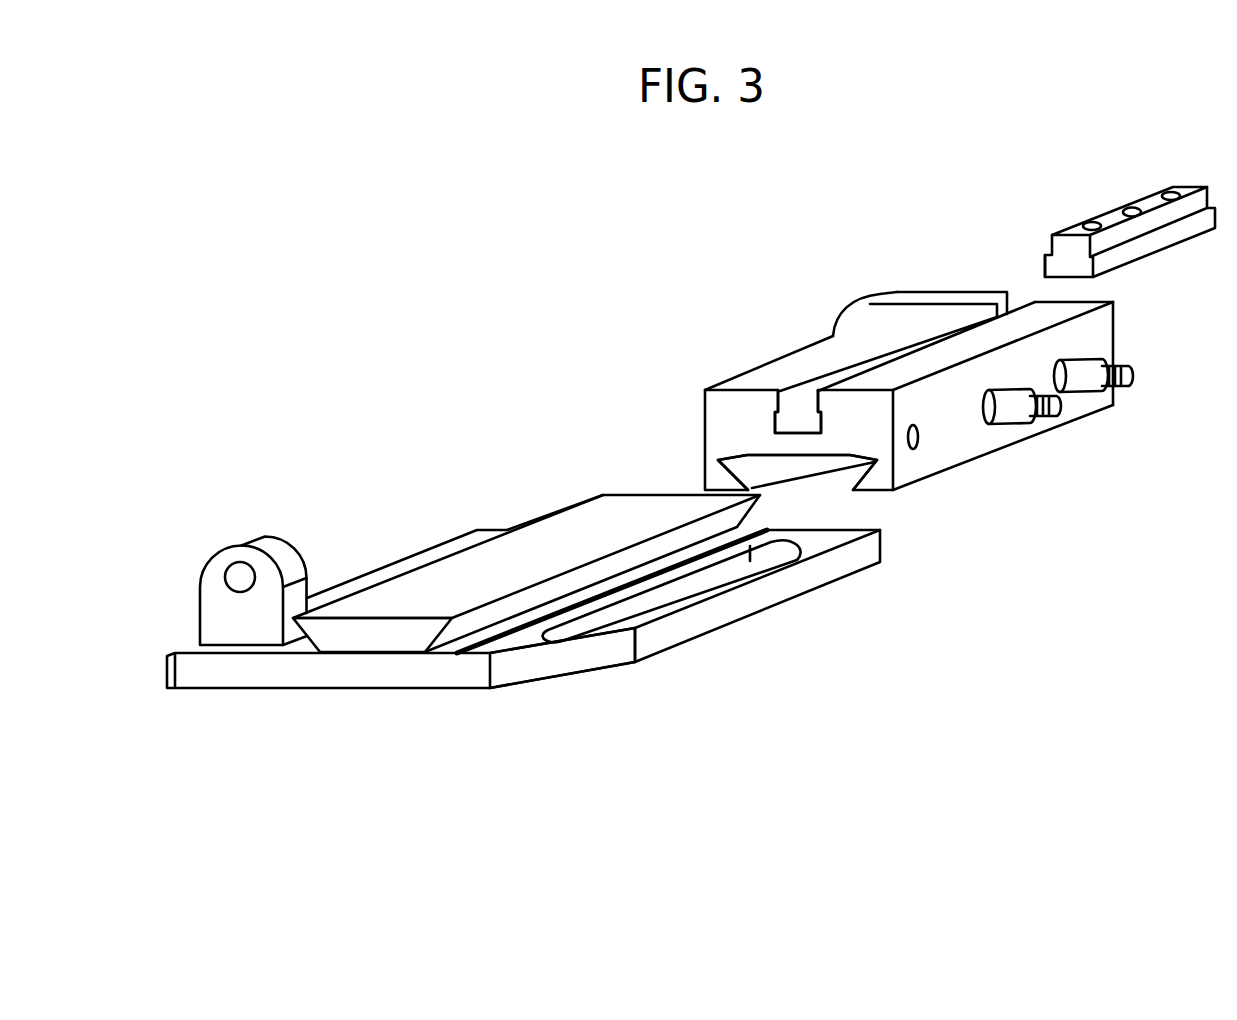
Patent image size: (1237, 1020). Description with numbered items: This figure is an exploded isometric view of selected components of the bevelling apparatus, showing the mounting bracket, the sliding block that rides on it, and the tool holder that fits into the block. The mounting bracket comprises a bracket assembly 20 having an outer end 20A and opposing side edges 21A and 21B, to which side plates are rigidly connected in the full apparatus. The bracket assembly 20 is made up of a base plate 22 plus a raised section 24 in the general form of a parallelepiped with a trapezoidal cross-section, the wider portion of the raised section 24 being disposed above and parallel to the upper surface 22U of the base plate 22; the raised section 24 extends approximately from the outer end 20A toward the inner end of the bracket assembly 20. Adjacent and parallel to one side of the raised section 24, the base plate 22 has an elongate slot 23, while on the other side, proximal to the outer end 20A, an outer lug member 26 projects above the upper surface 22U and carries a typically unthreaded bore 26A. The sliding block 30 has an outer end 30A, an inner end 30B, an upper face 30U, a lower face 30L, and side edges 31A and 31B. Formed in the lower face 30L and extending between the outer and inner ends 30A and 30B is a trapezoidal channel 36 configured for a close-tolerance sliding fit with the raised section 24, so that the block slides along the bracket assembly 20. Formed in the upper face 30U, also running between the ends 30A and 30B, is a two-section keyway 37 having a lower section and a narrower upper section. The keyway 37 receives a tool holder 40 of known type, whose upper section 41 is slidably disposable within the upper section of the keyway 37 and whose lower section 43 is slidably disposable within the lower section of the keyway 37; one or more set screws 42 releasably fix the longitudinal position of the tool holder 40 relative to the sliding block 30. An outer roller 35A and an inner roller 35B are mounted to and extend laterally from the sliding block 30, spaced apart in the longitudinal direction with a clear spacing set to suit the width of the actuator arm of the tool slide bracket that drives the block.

The bracket assembly 20 is at (331, 408).
The outer end 20A is at (320, 690).
The side edge 21A is at (365, 582).
The side edge 21B is at (652, 640).
The base plate 22 is at (445, 550).
The upper surface 22U is at (795, 558).
The elongate slot 23 is at (680, 580).
The raised section 24 is at (558, 509).
The outer lug member 26 is at (230, 545).
The bore 26A is at (240, 577).
The sliding block 30 is at (733, 304).
The outer end 30A is at (700, 440).
The inner end 30B is at (1120, 312).
The upper face 30U is at (781, 384).
The lower face 30L is at (960, 466).
The side edge 31A is at (812, 331).
The side edge 31B is at (1087, 345).
The outer roller 35A is at (1020, 428).
The inner roller 35B is at (1090, 395).
The trapezoidal channel 36 is at (857, 470).
The two-section keyway 37 is at (783, 418).
The tool holder 40 is at (1068, 182).
The upper section 41 is at (1050, 243).
The set screws 42 is at (1133, 207).
The lower section 43 is at (1045, 263).